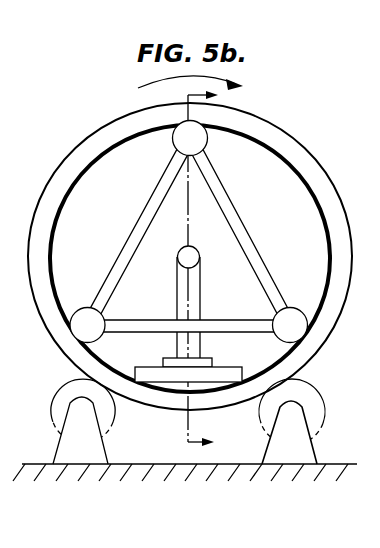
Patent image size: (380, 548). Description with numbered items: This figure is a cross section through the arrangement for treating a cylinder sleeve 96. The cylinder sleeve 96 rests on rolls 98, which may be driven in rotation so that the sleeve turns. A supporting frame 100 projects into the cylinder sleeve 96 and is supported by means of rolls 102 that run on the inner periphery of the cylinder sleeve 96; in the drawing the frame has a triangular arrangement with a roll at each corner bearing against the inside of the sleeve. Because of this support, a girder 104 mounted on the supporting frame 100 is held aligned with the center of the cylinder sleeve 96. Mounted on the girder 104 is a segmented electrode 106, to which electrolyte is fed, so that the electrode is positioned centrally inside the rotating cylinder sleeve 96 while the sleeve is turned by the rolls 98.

The cylinder sleeve 96 is at (277, 131).
The rolls 98 is at (58, 409).
The supporting frame 100 is at (236, 203).
The rolls 102 is at (96, 314).
The girder 104 is at (200, 347).
The segmented electrode 106 is at (215, 380).